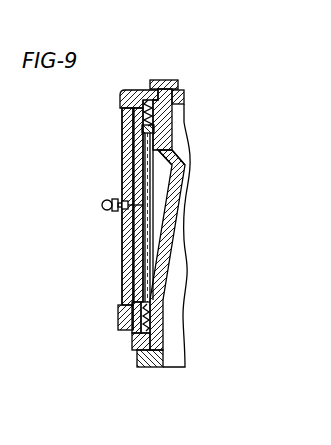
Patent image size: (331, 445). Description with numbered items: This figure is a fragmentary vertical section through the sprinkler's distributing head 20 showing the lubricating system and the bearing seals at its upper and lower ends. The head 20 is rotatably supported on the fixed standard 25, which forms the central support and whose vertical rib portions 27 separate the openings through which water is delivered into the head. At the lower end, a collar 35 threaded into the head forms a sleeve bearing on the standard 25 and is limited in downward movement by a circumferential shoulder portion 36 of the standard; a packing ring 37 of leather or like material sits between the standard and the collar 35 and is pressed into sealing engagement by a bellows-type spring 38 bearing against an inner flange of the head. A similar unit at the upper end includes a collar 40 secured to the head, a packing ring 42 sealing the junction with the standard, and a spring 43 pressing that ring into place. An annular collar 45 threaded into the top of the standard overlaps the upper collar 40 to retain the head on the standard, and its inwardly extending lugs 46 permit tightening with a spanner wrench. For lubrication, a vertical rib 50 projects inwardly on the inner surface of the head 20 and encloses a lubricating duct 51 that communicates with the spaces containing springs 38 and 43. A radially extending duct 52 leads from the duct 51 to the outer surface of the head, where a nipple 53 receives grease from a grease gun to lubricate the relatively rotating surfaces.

The distributing head 20 is at (122, 258).
The fixed standard 25 is at (185, 163).
The vertical rib portions 27 is at (170, 249).
The collar 35 is at (125, 335).
The circumferential shoulder portion 36 is at (145, 364).
The packing ring 37 is at (150, 333).
The spring 38 is at (163, 310).
The collar 40 is at (120, 100).
The packing ring 42 is at (184, 96).
The spring 43 is at (163, 116).
The annular collar 45 is at (178, 82).
The lugs 46 is at (184, 90).
The vertical rib 50 is at (150, 190).
The lubricating duct 51 is at (128, 155).
The radially extending duct 52 is at (125, 178).
The nipple 53 is at (100, 204).